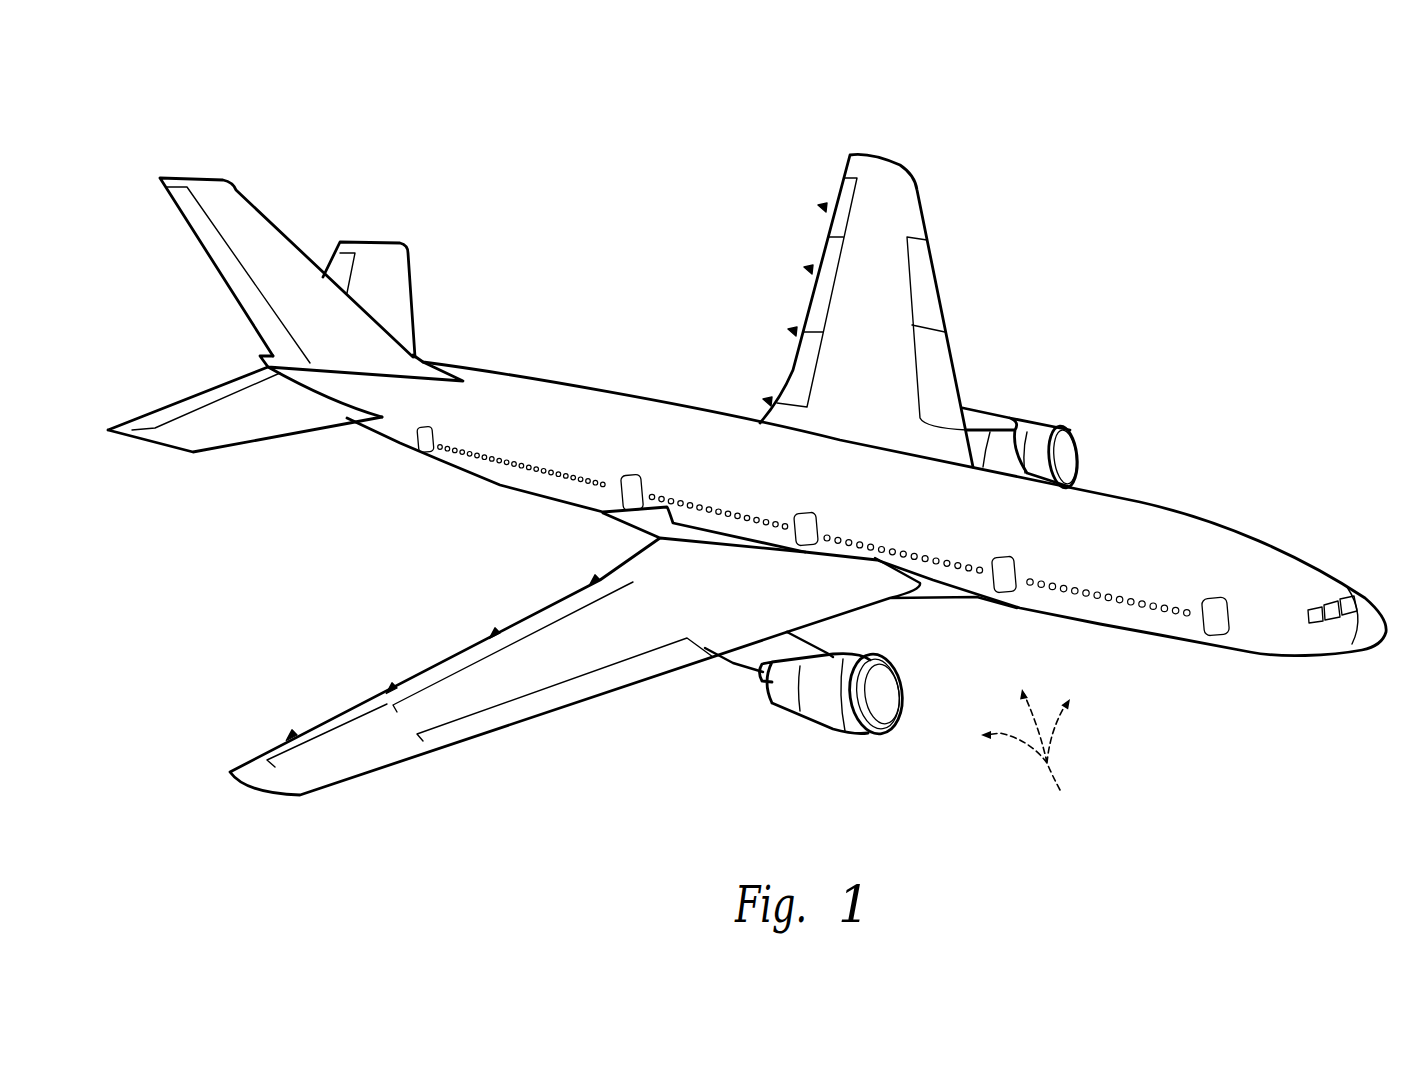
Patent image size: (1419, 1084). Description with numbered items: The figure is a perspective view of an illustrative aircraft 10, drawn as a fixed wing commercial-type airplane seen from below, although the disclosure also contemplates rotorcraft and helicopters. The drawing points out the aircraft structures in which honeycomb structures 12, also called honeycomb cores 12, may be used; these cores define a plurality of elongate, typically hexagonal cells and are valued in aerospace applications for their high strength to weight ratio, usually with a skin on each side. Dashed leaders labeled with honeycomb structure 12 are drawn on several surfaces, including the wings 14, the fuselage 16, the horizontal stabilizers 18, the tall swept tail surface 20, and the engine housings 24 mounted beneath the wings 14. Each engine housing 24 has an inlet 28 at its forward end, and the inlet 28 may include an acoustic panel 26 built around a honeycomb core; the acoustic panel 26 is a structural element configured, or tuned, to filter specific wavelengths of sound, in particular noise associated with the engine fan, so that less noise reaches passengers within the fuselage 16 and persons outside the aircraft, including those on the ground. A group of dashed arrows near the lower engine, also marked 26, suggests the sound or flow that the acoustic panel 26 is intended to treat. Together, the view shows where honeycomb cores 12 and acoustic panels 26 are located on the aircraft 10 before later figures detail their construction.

The aircraft 10 is at (747, 454).
The honeycomb structure 12 is at (247, 213).
The wing 14 is at (363, 775).
The fuselage 16 is at (615, 390).
The horizontal stabilizer 18 is at (230, 447).
The vertical stabilizer 20 is at (289, 238).
The engine housing 24 is at (927, 573).
The acoustic panel 26 is at (863, 682).
The inlet 28 is at (886, 658).